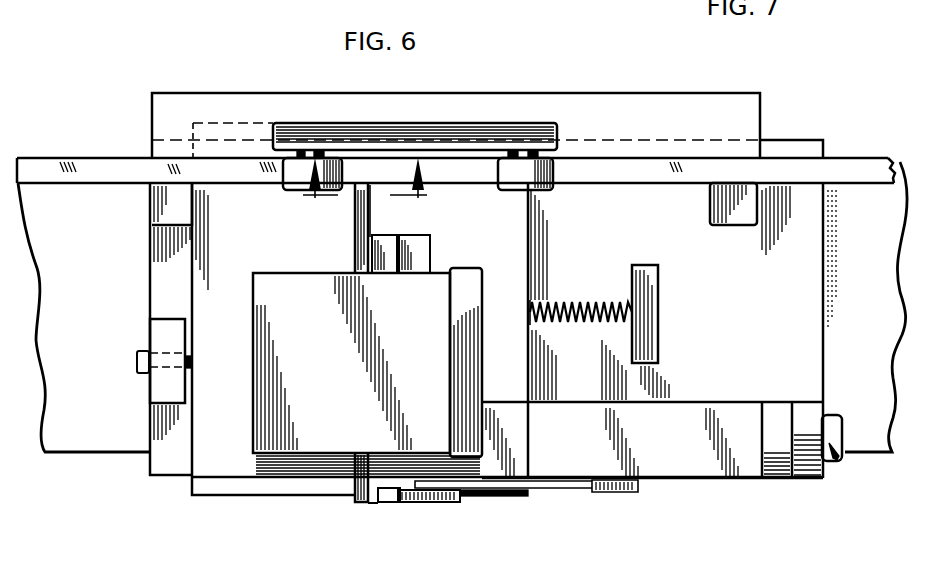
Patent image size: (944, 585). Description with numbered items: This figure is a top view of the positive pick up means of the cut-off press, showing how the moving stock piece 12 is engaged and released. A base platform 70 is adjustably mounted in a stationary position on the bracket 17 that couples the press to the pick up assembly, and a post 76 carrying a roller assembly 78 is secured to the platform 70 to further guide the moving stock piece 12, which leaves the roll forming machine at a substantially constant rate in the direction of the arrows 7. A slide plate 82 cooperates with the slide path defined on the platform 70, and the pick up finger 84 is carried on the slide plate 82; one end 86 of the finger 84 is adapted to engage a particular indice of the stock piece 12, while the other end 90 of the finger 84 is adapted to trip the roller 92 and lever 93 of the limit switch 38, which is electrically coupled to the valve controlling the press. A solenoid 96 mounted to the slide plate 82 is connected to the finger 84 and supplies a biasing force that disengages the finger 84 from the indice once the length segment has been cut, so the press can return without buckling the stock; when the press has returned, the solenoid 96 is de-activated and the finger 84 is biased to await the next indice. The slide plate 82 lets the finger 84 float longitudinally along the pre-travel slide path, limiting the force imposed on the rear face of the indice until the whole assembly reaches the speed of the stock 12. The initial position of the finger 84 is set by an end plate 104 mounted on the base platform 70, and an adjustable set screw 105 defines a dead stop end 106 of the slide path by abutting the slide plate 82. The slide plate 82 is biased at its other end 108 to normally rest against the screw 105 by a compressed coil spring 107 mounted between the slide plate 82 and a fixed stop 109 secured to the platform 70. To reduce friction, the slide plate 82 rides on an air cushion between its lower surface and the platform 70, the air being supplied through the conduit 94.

In FIG. 6, the arrow indicating direction of movement 7 is at (365, 191).
In FIG. 6, the stock piece 12 is at (93, 165).
In FIG. 6, the bracket 17 is at (90, 427).
In FIG. 6, the limit switch 38 is at (708, 455).
In FIG. 6, the base platform 70 is at (790, 197).
In FIG. 6, the post 76 is at (405, 128).
In FIG. 6, the roller assembly 78 is at (292, 163).
In FIG. 6, the slide plate 82 is at (528, 233).
In FIG. 6, the pick up finger 84 is at (358, 221).
In FIG. 7, the pick up finger 84 is at (630, 0).
In FIG. 6, the one end of finger 86 is at (372, 193).
In FIG. 6, the other end of finger 90 is at (371, 493).
In FIG. 6, the roller 92 is at (460, 504).
In FIG. 6, the lever 93 is at (585, 489).
In FIG. 6, the conduit 94 is at (835, 427).
In FIG. 6, the solenoid 96 is at (268, 421).
In FIG. 6, the end plate 104 is at (155, 330).
In FIG. 6, the adjustable set screw 105 is at (140, 356).
In FIG. 6, the dead stop end 106 is at (192, 362).
In FIG. 6, the compressed coil spring 107 is at (573, 326).
In FIG. 6, the other end of slide plate 108 is at (530, 330).
In FIG. 6, the fixed stop 109 is at (650, 340).